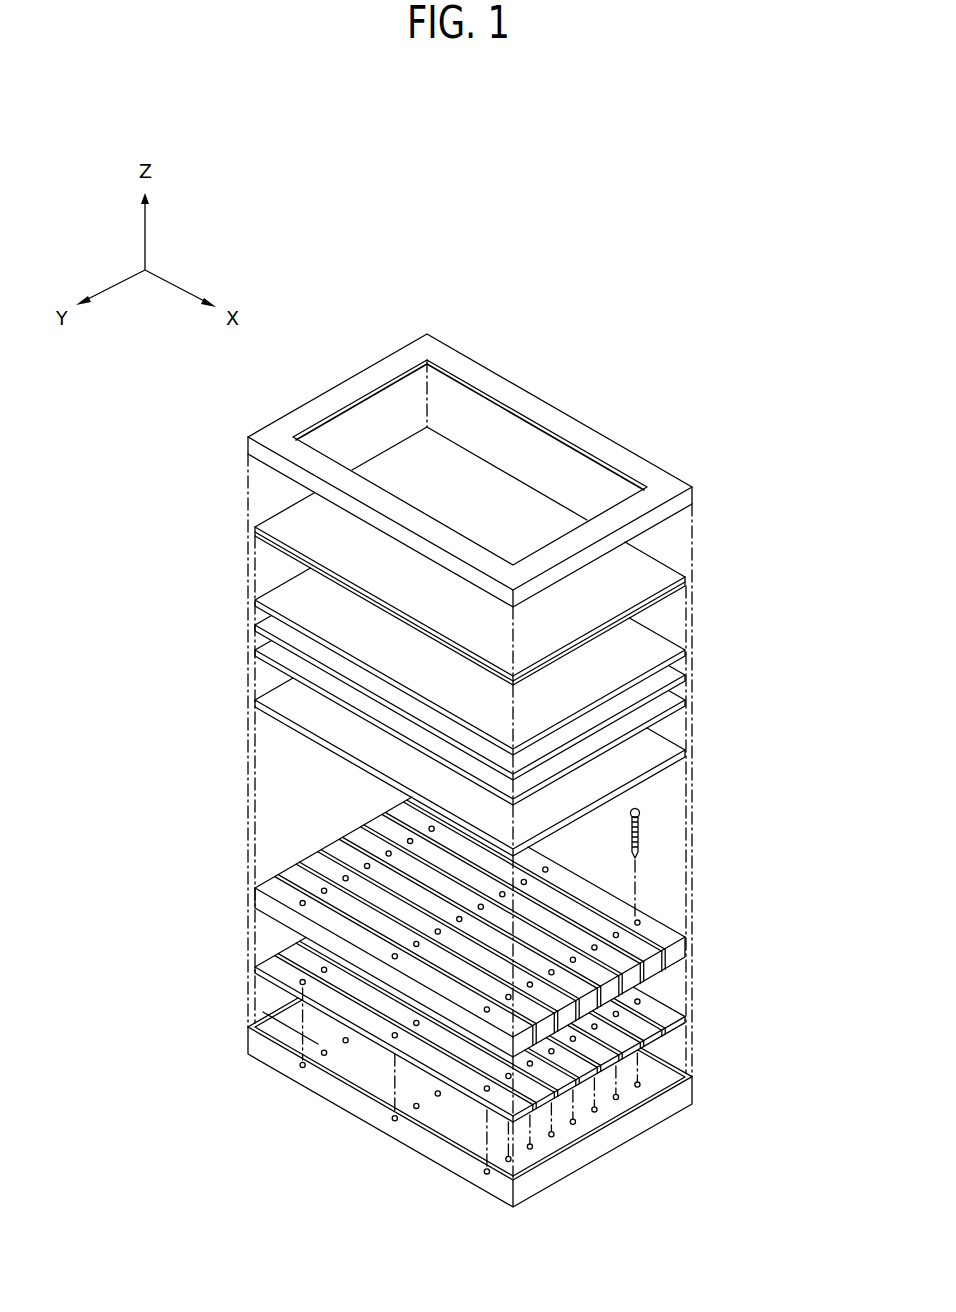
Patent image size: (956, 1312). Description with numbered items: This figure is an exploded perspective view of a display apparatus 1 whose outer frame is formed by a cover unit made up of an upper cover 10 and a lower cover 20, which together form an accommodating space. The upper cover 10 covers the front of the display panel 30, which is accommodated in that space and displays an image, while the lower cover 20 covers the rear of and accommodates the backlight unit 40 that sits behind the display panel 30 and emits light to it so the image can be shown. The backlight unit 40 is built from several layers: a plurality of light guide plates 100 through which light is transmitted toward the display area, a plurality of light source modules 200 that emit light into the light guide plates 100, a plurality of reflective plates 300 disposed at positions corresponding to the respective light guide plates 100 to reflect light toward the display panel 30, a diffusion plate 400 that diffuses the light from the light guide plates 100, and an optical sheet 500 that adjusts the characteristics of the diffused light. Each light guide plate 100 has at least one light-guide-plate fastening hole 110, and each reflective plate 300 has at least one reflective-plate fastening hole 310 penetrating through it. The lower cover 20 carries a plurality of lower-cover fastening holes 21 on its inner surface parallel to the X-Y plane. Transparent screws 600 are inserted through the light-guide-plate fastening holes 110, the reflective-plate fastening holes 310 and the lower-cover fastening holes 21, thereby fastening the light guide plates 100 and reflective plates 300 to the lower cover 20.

The display apparatus 1 is at (671, 359).
The upper cover 10 is at (248, 444).
The lower cover 20 is at (350, 1110).
The lower-cover fastening holes 21 is at (320, 1053).
The display panel 30 is at (255, 527).
The backlight unit 40 is at (777, 644).
The light guide plates 100 is at (318, 866).
The light-guide-plate fastening holes 110 is at (320, 892).
The light source modules 200 is at (688, 948).
The reflective plates 300 is at (665, 1020).
The reflective-plate fastening holes 310 is at (320, 975).
The diffusion plate 400 is at (255, 702).
The optical sheet 500 is at (232, 600).
The transparent screws 600 is at (641, 826).